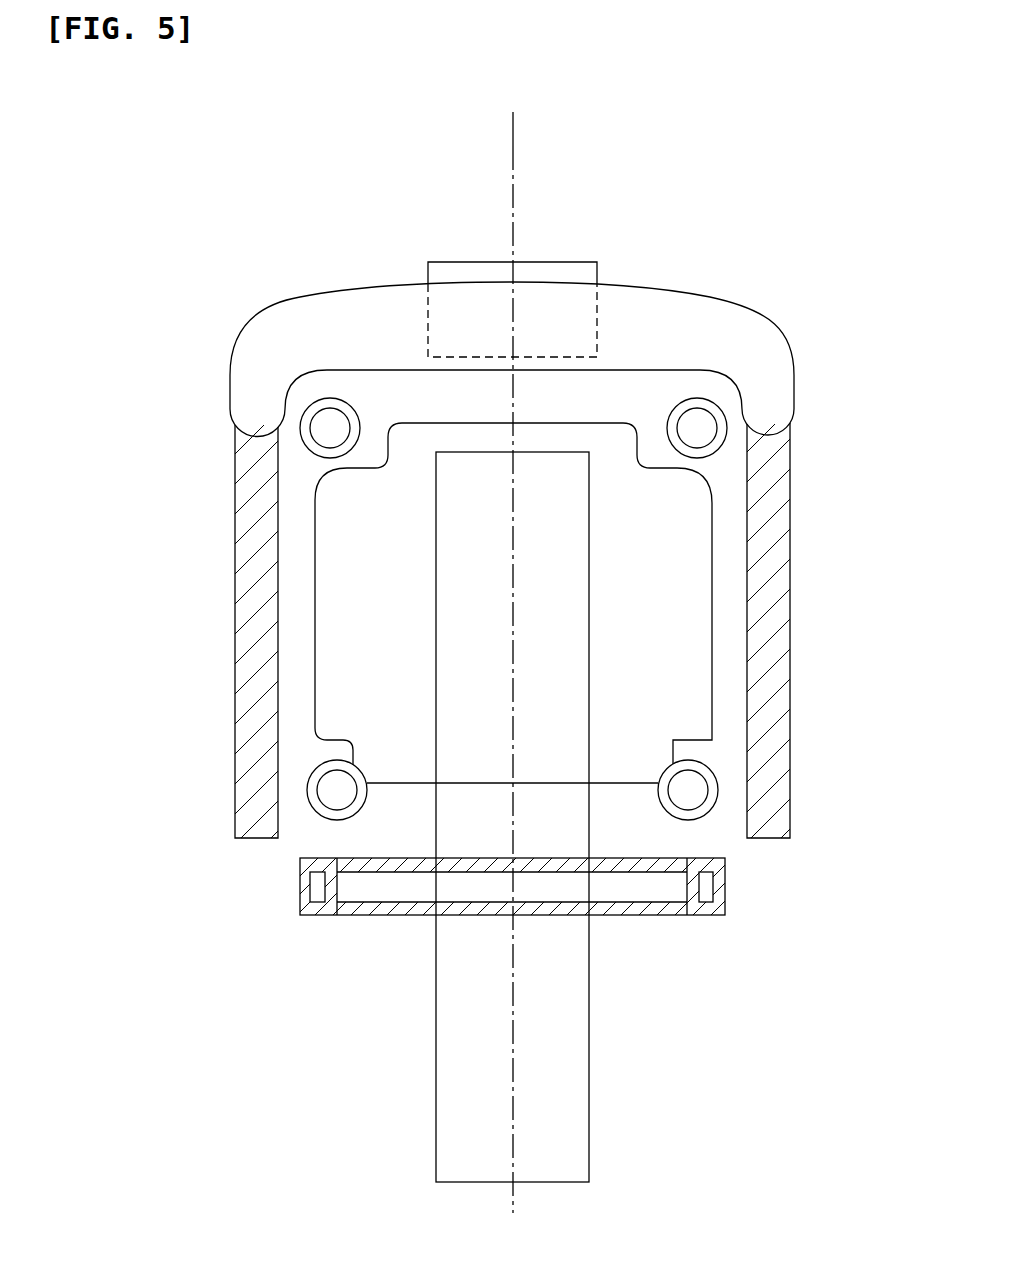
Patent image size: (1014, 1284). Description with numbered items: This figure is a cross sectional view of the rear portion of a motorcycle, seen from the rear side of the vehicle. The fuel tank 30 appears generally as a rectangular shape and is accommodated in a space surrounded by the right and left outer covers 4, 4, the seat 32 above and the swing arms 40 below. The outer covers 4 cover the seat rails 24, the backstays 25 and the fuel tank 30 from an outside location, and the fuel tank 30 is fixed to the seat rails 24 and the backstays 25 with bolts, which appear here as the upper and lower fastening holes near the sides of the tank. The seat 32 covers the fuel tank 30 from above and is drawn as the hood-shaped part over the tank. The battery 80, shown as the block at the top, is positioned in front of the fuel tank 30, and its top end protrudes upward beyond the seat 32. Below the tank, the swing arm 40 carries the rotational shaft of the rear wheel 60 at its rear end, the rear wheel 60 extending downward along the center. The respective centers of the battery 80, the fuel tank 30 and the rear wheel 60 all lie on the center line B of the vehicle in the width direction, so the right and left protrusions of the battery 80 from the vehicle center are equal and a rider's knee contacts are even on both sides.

The center line B is at (513, 142).
The outer cover 4 is at (255, 546).
The seat rail 24 is at (302, 414).
The backstay 25 is at (327, 788).
The fuel tank 30 is at (713, 660).
The seat 32 is at (723, 328).
The swing arm 40 is at (300, 888).
The rear wheel 60 is at (577, 1090).
The battery 80 is at (570, 275).